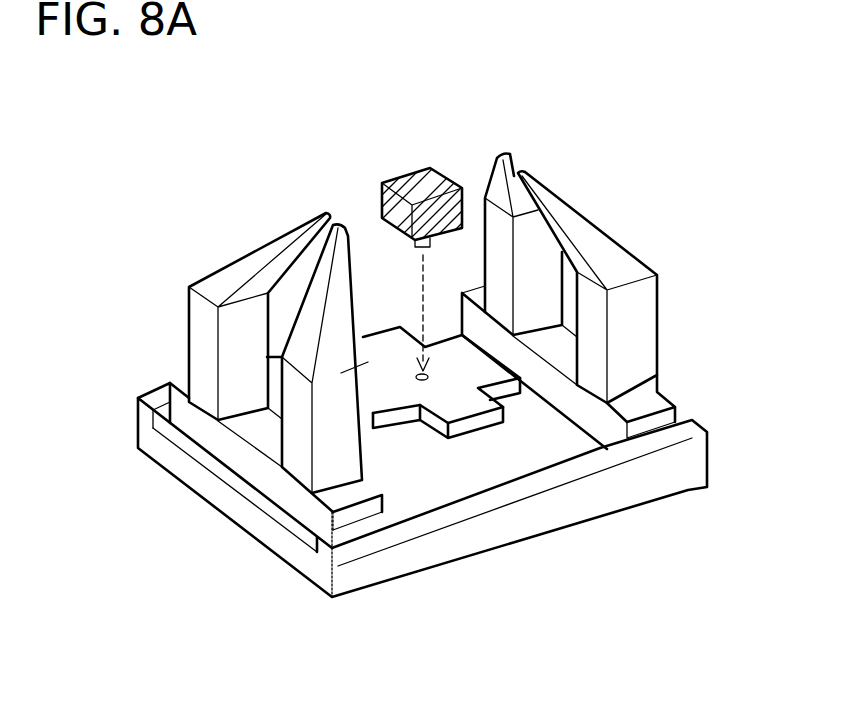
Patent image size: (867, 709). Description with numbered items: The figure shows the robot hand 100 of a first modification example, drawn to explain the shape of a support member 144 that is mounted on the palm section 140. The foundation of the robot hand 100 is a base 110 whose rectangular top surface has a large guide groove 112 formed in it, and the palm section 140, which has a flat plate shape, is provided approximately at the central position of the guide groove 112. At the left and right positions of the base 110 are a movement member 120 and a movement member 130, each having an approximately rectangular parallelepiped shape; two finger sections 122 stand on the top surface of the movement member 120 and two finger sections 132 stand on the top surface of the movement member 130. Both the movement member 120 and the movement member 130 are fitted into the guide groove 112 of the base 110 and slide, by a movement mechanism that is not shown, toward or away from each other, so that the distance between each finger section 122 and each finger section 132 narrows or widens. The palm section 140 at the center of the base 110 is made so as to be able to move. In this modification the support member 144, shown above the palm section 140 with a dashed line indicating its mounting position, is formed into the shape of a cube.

The robot hand 100 is at (331, 149).
The base 110 is at (238, 524).
The guide groove 112 is at (427, 482).
The movement member 120 is at (183, 381).
The finger sections 122 is at (298, 308).
The movement member 130 is at (667, 392).
The finger sections 132 is at (557, 187).
The palm section 140 is at (480, 435).
The support member 144 is at (437, 165).